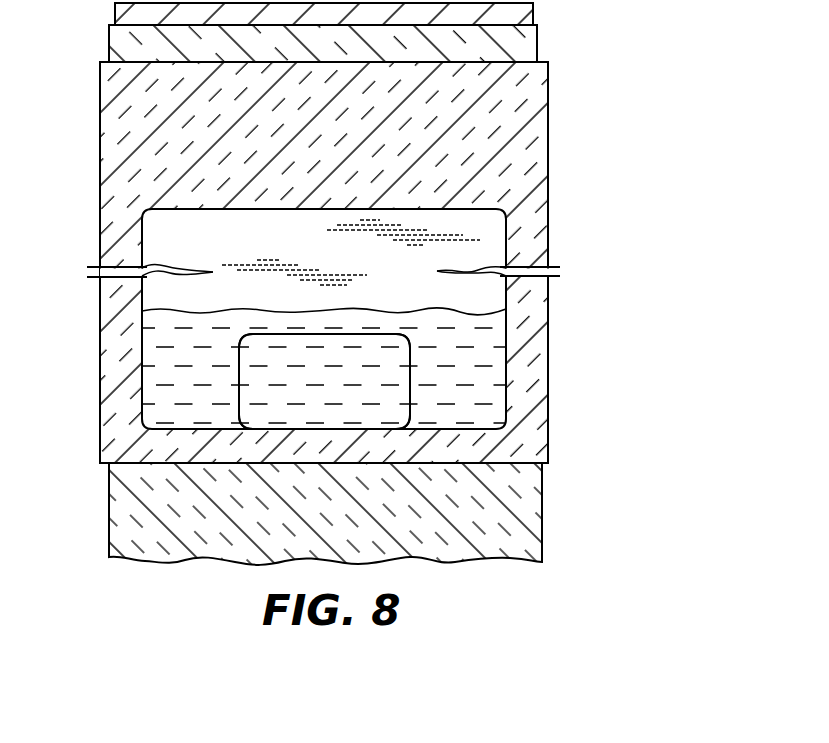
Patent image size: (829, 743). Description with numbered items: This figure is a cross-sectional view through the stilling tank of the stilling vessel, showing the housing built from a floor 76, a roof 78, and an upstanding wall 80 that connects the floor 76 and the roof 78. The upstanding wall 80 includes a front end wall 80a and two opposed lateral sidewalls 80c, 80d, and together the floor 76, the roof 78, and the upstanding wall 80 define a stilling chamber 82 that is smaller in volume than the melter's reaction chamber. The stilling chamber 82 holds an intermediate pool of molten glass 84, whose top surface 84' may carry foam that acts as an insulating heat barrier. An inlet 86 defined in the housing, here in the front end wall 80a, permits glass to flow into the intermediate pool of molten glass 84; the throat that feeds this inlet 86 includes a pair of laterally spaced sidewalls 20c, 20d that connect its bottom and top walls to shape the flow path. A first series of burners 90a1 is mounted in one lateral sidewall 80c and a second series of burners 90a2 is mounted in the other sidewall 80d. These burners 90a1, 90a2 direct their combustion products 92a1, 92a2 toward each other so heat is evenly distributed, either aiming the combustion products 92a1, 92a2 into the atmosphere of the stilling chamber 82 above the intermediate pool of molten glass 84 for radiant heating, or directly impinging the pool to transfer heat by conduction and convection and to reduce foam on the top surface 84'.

The floor 76 is at (492, 444).
The roof 78 is at (503, 137).
The upstanding wall 80 is at (108, 215).
The front end wall 80a is at (204, 244).
The lateral sidewall 80c is at (533, 296).
The lateral sidewall 80d is at (118, 341).
The stilling chamber 82 is at (504, 333).
The intermediate pool of molten glass 84 is at (324, 375).
The top surface 84' is at (324, 297).
The inlet 86 is at (398, 387).
The sidewall 20c is at (410, 360).
The sidewall 20d is at (240, 373).
The first series of burners 90a1 is at (527, 262).
The second series of burners 90a2 is at (101, 263).
The combustion products 92a1 is at (490, 280).
The combustion products 92a2 is at (167, 275).